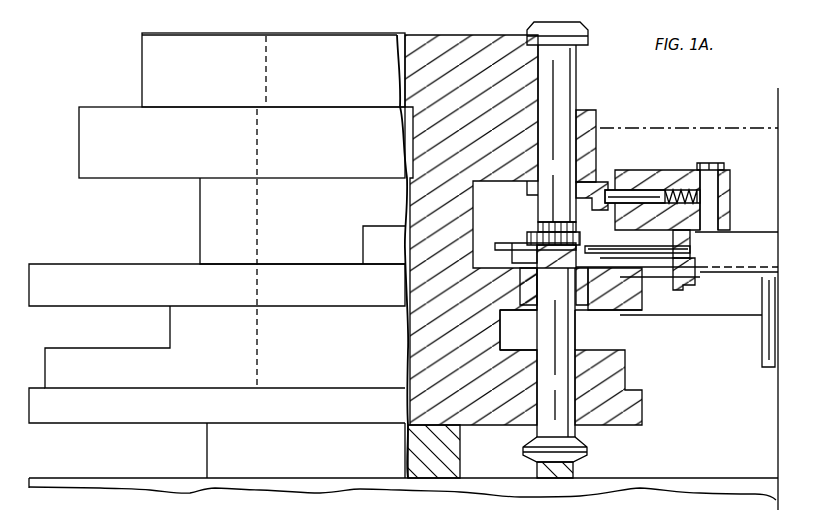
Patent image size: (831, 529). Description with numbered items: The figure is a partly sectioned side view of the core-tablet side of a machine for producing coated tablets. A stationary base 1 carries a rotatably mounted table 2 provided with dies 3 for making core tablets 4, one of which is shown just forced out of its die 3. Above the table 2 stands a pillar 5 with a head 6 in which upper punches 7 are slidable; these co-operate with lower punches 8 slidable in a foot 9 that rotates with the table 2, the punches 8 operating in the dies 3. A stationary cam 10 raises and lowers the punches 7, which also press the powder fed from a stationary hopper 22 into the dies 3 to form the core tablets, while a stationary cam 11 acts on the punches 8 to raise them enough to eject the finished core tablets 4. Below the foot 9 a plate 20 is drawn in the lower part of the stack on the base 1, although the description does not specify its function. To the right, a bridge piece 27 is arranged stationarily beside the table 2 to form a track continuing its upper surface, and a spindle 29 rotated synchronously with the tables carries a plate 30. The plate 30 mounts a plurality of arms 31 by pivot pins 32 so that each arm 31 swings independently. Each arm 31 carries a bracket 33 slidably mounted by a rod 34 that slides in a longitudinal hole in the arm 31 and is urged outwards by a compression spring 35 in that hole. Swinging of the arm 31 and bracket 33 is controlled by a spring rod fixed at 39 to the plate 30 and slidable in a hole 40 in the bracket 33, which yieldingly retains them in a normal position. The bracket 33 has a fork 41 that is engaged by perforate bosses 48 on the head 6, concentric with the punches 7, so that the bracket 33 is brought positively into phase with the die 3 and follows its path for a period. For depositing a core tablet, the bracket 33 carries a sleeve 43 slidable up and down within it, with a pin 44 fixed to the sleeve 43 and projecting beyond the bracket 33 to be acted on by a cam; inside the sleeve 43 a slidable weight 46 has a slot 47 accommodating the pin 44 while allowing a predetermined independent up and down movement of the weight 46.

The stationary base 1 is at (184, 482).
The table 2 is at (423, 178).
The die 3 is at (527, 303).
The core tablet 4 is at (556, 270).
The pillar 5 is at (209, 227).
The head 6 is at (90, 145).
The punch 7 is at (561, 84).
The punch 8 is at (559, 345).
The foot 9 is at (87, 353).
The stationary cam 10 is at (156, 77).
The stationary cam 11 is at (565, 470).
The plate 20 is at (66, 408).
The stationary hopper 22 is at (378, 248).
The bridge piece 27 is at (727, 304).
The spindle 29 is at (770, 352).
The plate 30 is at (736, 252).
The arm 31 is at (662, 180).
The pivot pin 32 is at (709, 183).
The bracket 33 is at (600, 182).
The rod 34 is at (636, 195).
The compression spring 35 is at (718, 199).
The fixing point of spring rod 39 is at (651, 268).
The hole 40 is at (597, 249).
The fork 41 is at (558, 186).
The sleeve 43 is at (533, 235).
The pin 44 is at (505, 247).
The weight 46 is at (558, 231).
The slot 47 is at (520, 258).
The perforate boss 48 is at (528, 188).